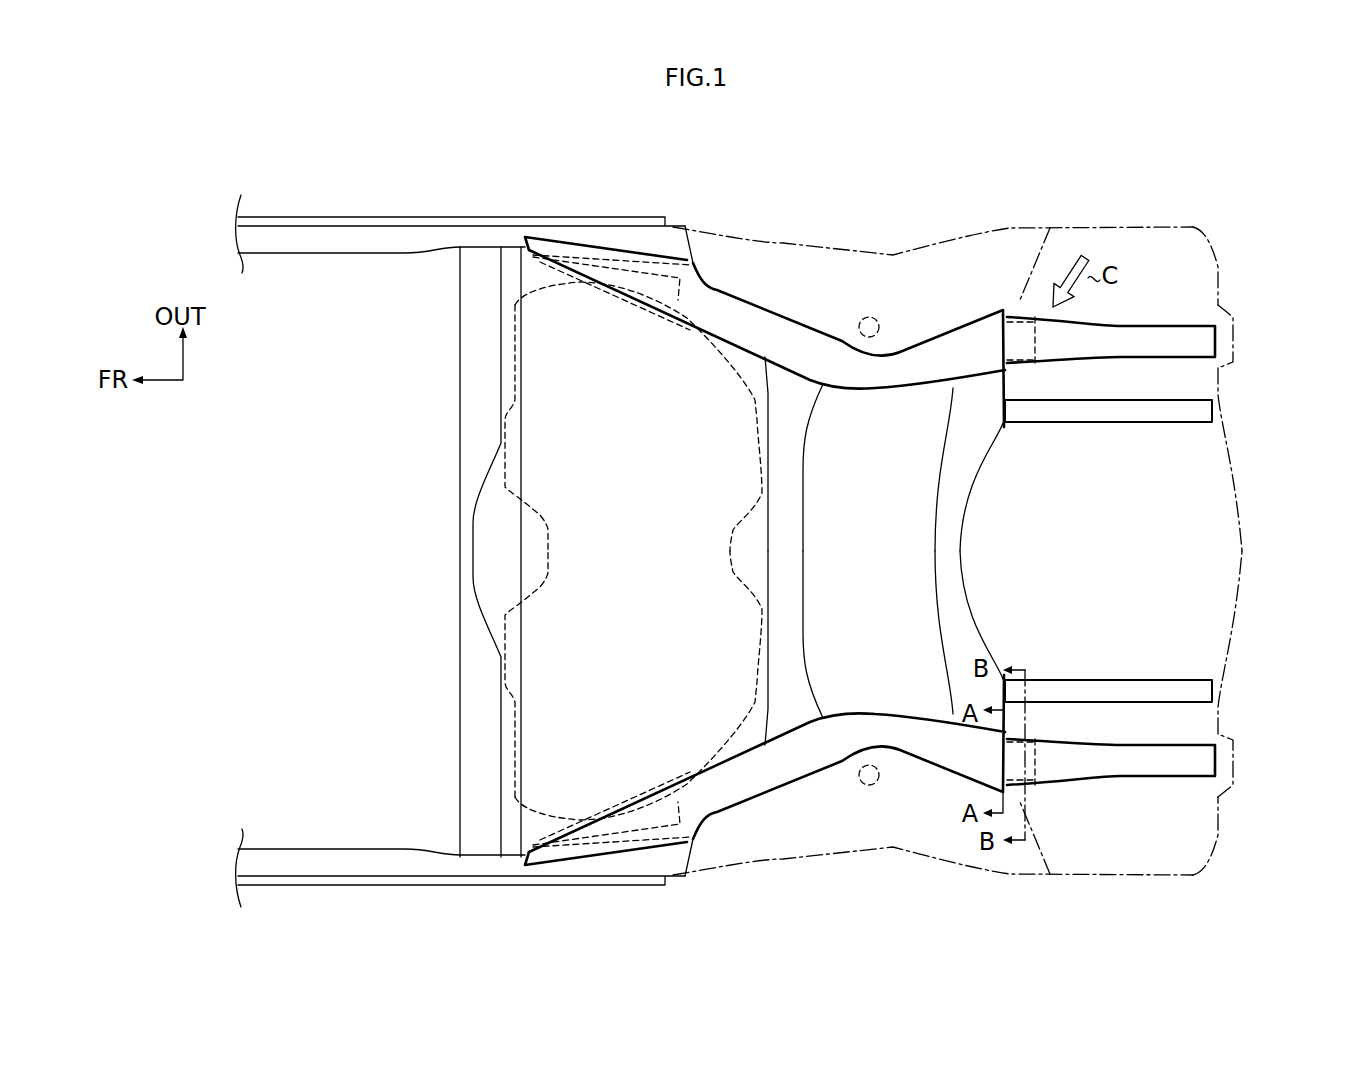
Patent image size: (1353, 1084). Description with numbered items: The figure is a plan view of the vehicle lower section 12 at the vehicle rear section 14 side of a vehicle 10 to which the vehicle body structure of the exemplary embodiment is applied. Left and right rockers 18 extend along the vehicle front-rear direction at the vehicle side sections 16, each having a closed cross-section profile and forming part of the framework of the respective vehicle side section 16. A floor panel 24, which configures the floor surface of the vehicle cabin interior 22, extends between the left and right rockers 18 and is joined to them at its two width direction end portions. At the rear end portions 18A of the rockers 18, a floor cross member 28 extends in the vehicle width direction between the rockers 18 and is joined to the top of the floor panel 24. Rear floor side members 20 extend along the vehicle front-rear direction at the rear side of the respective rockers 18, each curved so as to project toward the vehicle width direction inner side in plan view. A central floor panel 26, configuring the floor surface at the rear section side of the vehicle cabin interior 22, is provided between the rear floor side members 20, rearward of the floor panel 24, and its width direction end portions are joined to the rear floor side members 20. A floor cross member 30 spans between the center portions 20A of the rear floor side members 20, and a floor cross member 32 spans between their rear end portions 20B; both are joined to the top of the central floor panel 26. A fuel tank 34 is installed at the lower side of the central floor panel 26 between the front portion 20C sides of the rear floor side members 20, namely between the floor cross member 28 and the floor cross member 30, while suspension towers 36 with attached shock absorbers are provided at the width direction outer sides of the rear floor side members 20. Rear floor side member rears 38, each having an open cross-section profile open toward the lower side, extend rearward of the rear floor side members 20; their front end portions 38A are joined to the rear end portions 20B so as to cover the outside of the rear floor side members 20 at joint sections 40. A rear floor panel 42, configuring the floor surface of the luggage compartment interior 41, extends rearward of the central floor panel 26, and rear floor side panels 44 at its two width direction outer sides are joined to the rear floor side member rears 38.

The vehicle 10 is at (1003, 160).
The vehicle lower section 12 is at (695, 195).
The vehicle rear section 14 is at (790, 226).
The vehicle side sections 16 is at (408, 204).
The rocker 18 is at (342, 236).
The rear end portion of rocker 18A is at (560, 233).
The rear floor side member 20 is at (838, 352).
The center portion of rear floor side member 20A is at (843, 376).
The rear end portion of rear floor side member 20B is at (985, 348).
The front portion of rear floor side member 20C is at (673, 296).
The vehicle cabin interior 22 is at (290, 468).
The floor panel 24 is at (268, 297).
The central floor panel 26 is at (588, 300).
The floor cross member 28 is at (468, 630).
The floor cross member 30 is at (777, 570).
The floor cross member 32 is at (945, 567).
The fuel tank 34 is at (560, 473).
The suspension tower 36 is at (930, 290).
The rear floor side member rear 38 is at (1118, 333).
The front end portion of rear floor side member rear 38A is at (1042, 350).
The joint section 40 is at (1042, 296).
The luggage compartment interior 41 is at (1133, 500).
The rear floor panel 42 is at (1193, 541).
The rear floor side panel 44 is at (1185, 312).